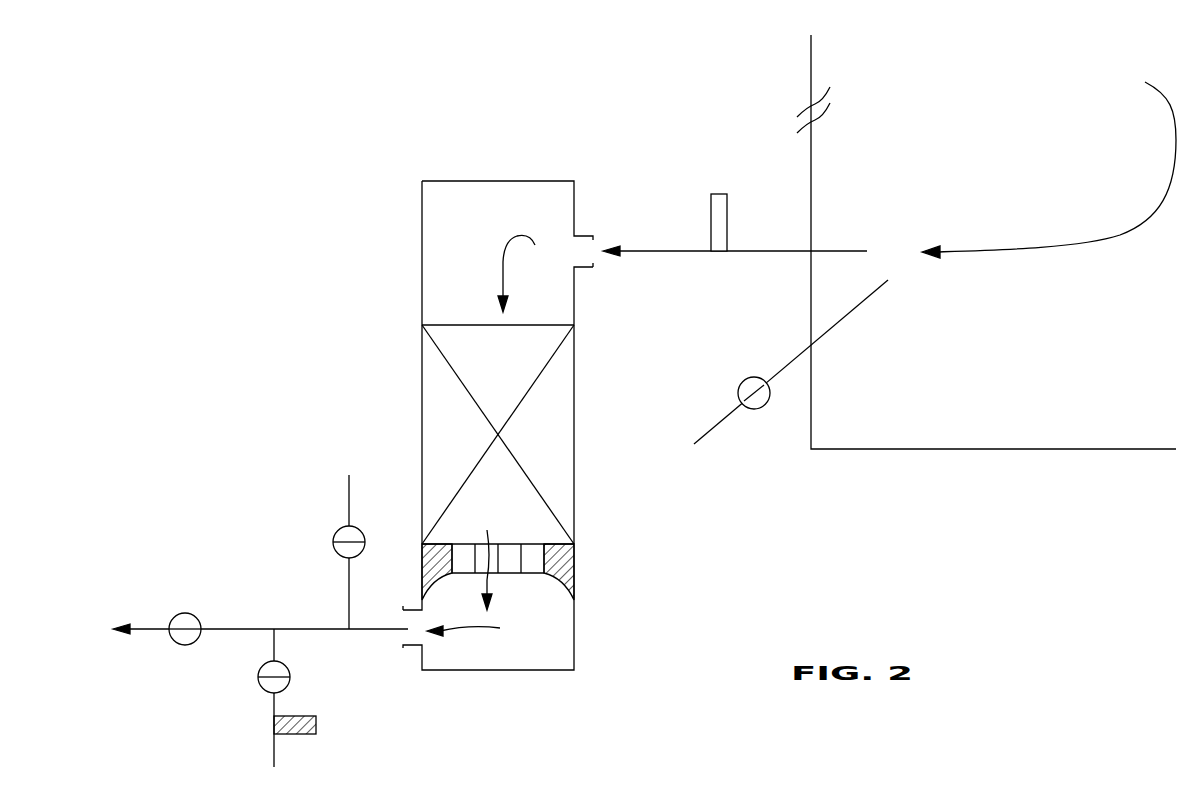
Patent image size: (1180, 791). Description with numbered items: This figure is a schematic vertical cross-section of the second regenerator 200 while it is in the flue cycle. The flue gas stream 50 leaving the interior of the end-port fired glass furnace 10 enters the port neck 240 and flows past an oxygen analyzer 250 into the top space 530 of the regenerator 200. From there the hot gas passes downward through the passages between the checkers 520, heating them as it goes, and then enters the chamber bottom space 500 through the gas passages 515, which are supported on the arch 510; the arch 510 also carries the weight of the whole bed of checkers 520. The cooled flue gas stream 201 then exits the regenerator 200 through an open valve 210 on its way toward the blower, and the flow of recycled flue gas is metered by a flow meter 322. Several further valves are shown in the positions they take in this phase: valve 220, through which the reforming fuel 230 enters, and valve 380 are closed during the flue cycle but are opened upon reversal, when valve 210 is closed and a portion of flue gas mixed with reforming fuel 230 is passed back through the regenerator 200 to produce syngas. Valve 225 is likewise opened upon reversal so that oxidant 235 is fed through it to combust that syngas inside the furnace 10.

The end-port fired glass furnace 10 is at (1110, 450).
The flue gas stream 50 is at (1063, 270).
The second regenerator 200 is at (462, 181).
The cooled flue gas stream 201 is at (380, 636).
The valve 210 is at (186, 646).
The valve 220 is at (333, 543).
The valve 225 is at (752, 410).
The reforming fuel 230 is at (349, 495).
The oxidant 235 is at (705, 443).
The port neck 240 is at (756, 252).
The oxygen analyzer 250 is at (720, 194).
The flow meter 322 is at (312, 736).
The valve 380 is at (291, 668).
The chamber bottom space 500 is at (554, 657).
The arch 510 is at (562, 563).
The gas passages 515 is at (536, 544).
The checkers 520 is at (565, 451).
The top space 530 is at (472, 225).